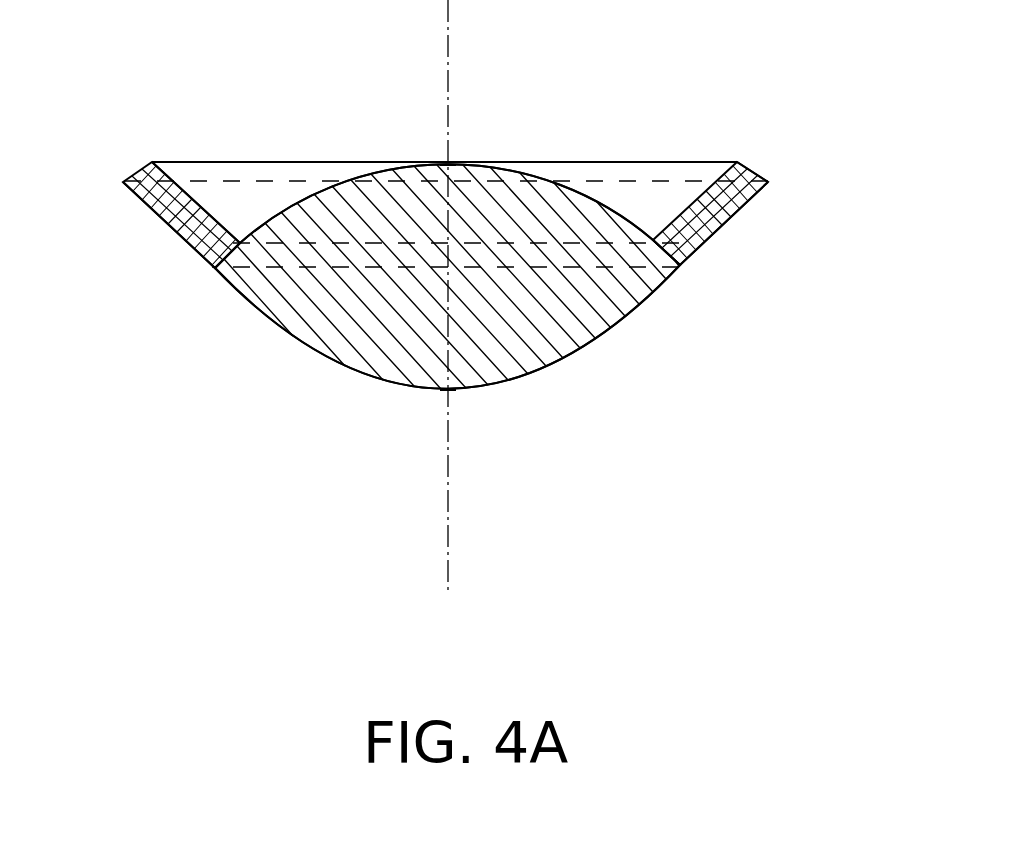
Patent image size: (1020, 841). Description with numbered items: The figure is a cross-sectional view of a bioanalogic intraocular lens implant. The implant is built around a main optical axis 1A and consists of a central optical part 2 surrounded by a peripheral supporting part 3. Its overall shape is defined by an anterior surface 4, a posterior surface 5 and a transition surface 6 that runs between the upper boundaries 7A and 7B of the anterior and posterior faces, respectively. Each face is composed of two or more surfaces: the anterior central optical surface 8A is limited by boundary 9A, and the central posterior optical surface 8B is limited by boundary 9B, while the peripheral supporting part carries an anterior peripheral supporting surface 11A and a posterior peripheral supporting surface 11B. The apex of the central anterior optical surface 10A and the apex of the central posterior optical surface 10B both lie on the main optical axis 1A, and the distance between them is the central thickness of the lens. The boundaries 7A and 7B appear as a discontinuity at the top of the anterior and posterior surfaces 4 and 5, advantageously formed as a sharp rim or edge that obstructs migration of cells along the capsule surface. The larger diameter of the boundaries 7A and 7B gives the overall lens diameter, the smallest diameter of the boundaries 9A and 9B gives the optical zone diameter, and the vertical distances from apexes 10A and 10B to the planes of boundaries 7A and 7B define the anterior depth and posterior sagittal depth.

The main optical axis 1A is at (474, 295).
The central optical part 2 is at (447, 276).
The peripheral supporting part 3 is at (445, 215).
The anterior surface 4 is at (666, 250).
The posterior surface 5 is at (610, 326).
The transition surface 6 is at (752, 169).
The upper boundary of the anterior face 7A is at (152, 162).
The upper boundary of the posterior face 7B is at (123, 182).
The anterior central optical surface 8A is at (510, 173).
The central posterior optical surface 8B is at (547, 362).
The boundary of the anterior central optical surface 9A is at (240, 243).
The boundary of the central posterior optical surface 9B is at (683, 264).
The apex of the central anterior optical surface 10A is at (448, 165).
The apex of the central posterior optical surface 10B is at (448, 392).
The anterior peripheral supporting surface 11A is at (202, 212).
The posterior peripheral supporting surface 11B is at (193, 250).